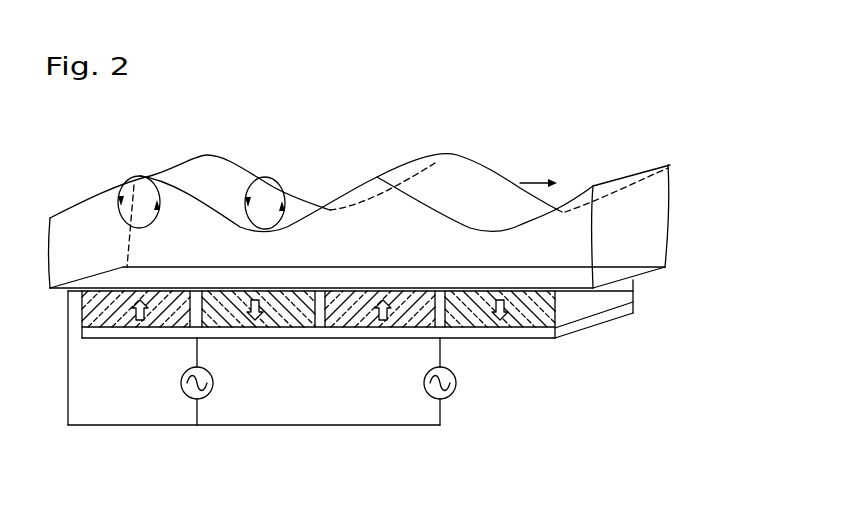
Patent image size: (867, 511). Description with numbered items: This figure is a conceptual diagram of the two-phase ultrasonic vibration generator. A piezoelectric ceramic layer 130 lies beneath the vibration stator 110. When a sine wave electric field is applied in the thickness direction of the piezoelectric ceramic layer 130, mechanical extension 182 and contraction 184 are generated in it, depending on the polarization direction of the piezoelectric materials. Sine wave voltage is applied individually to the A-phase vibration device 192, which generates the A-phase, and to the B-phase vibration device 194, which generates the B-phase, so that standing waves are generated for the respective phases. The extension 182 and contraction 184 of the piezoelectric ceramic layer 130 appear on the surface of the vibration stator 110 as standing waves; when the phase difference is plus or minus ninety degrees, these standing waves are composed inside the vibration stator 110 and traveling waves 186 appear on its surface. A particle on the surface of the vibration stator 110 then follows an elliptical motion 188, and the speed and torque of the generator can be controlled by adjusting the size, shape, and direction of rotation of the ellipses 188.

The vibration stator 110 is at (647, 238).
The piezoelectric ceramic layer 130 is at (604, 304).
The mechanical extension 182 is at (130, 328).
The contraction 184 is at (268, 328).
The traveling waves 186 is at (500, 183).
The elliptical motion 188 is at (178, 163).
The A-phase vibration device 192 is at (179, 343).
The B-phase vibration device 194 is at (577, 341).